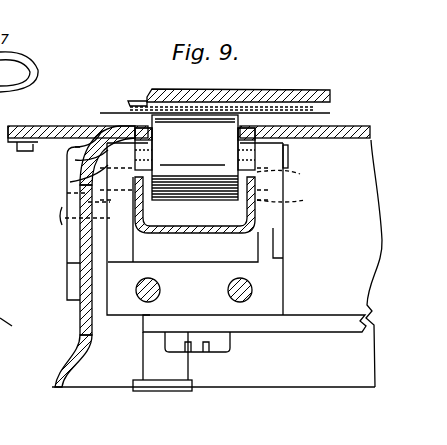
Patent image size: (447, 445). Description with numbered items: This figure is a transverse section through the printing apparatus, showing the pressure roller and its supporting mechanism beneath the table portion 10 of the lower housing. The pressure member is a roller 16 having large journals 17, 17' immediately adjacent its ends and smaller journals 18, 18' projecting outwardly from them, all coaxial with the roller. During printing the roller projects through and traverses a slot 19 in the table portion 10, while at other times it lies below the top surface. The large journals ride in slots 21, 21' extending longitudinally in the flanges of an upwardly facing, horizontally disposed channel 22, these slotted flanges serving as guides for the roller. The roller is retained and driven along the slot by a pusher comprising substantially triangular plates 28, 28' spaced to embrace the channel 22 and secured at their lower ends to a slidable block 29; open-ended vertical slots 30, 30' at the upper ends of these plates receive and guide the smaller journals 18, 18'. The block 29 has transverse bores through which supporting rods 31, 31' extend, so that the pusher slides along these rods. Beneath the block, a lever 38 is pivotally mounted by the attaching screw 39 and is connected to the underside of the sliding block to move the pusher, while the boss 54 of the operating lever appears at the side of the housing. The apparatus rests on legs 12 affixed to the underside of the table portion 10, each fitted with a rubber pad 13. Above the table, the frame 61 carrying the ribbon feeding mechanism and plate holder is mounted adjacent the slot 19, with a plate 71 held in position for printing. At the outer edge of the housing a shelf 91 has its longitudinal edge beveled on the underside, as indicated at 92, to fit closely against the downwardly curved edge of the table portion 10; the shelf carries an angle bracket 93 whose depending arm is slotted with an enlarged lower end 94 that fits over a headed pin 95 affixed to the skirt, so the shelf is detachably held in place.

The frame 61 is at (299, 78).
The plate 71 is at (143, 101).
The slot 19 is at (150, 119).
The beveled edge 92 is at (85, 113).
The shelf 91 is at (50, 102).
The angle bracket 93 is at (12, 148).
The small journal 18 is at (73, 162).
The large journal 17 is at (69, 179).
The slot 21 is at (144, 203).
The headed pin 95 is at (62, 220).
The triangular plate 28 is at (134, 229).
The enlarged slot end 94 is at (72, 262).
The boss 54 is at (9, 330).
The supporting rod 31 is at (131, 311).
The leg 12 is at (165, 356).
The pad 13 is at (162, 387).
The attaching screw 39 is at (216, 344).
The lever 38 is at (282, 327).
The slidable block 29 is at (197, 294).
The channel 22 is at (188, 235).
The roller 16 is at (195, 157).
The slot 30 is at (168, 184).
The large journal 17' is at (305, 124).
The table portion 10 is at (343, 125).
The small journal 18' is at (310, 156).
The slot 30' is at (299, 178).
The slot 21' is at (299, 201).
The triangular plate 28' is at (305, 229).
The supporting rod 31' is at (283, 289).